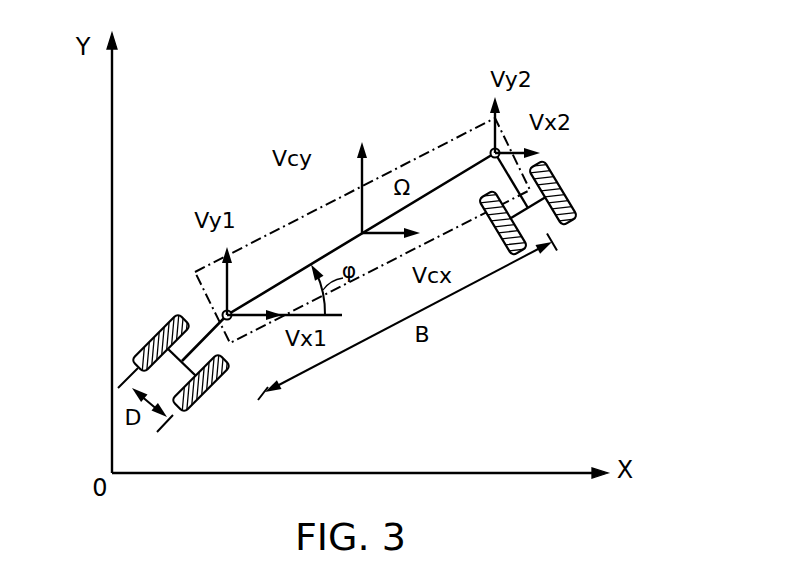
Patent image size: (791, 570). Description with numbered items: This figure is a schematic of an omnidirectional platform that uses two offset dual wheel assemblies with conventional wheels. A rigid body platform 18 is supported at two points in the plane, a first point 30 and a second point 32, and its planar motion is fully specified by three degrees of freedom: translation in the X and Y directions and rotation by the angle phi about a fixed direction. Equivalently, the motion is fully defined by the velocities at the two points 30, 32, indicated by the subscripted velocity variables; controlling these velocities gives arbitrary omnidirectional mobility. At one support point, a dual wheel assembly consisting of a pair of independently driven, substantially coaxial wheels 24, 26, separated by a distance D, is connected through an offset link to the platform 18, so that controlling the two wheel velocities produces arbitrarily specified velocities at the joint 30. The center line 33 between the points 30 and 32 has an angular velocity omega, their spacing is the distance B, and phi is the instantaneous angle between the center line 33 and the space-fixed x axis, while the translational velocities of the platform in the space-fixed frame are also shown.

The rigid body platform 18 is at (445, 143).
The wheel 24 is at (143, 350).
The wheel 26 is at (213, 390).
The point (joint) 30 is at (222, 312).
The point (pivot point) 32 is at (500, 156).
The center line 33 is at (313, 263).